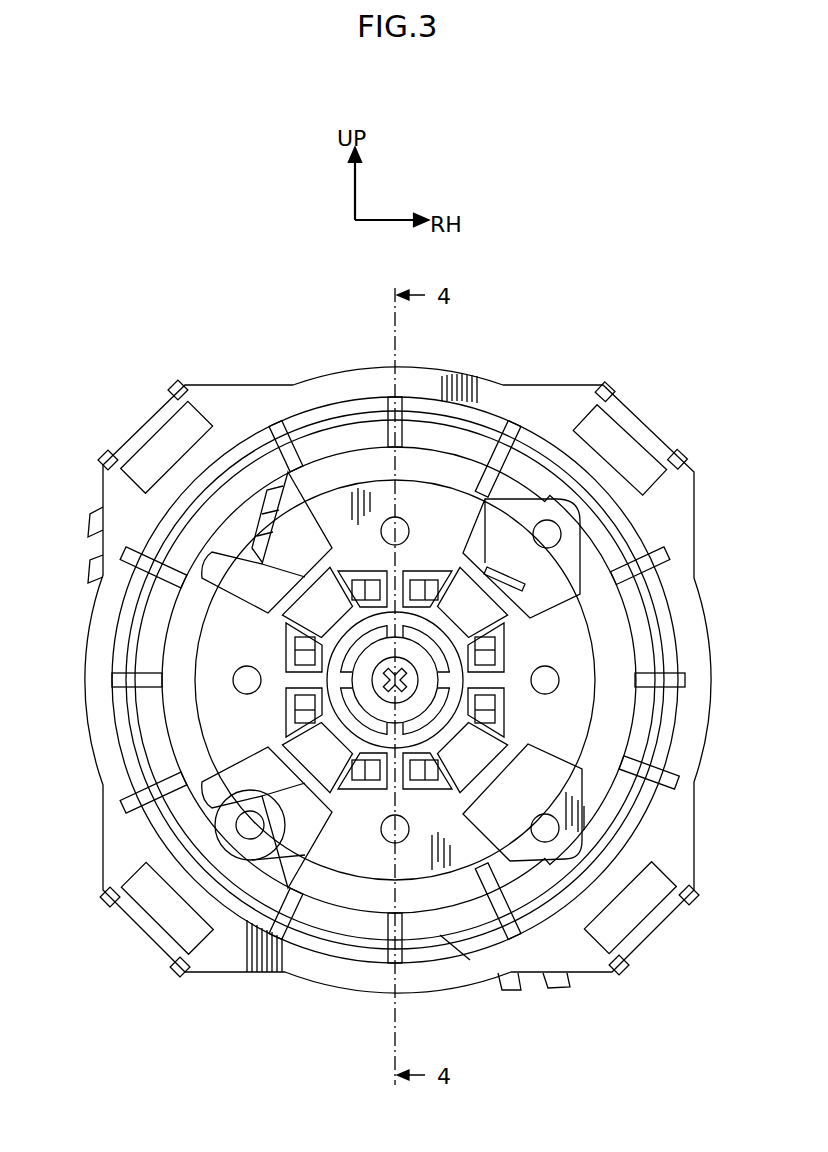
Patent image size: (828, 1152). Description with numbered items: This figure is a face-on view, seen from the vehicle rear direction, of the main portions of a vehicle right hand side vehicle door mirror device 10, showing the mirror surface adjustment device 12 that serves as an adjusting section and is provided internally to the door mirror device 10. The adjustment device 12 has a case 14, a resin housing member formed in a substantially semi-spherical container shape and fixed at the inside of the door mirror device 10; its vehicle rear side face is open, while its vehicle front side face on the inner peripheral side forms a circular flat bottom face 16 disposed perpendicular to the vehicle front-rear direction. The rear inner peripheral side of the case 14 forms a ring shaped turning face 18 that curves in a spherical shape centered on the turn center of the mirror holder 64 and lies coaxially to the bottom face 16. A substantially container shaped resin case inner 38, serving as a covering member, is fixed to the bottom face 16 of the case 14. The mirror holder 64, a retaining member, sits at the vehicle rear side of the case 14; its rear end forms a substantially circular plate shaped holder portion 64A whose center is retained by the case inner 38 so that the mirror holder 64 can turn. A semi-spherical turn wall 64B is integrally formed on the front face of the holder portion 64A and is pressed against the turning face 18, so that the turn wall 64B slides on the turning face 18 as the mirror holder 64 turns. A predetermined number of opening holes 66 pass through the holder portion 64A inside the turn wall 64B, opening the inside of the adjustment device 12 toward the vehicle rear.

The vehicle door mirror device 10 is at (378, 622).
The mirror surface adjustment device 12 is at (108, 320).
The case 14 is at (280, 463).
The bottom face 16 is at (503, 490).
The turning face 18 is at (340, 440).
The case inner 38 is at (570, 558).
The mirror holder 64 is at (477, 379).
The holder portion 64A is at (313, 982).
The turn wall 64B is at (467, 953).
The opening holes 66 is at (436, 1034).